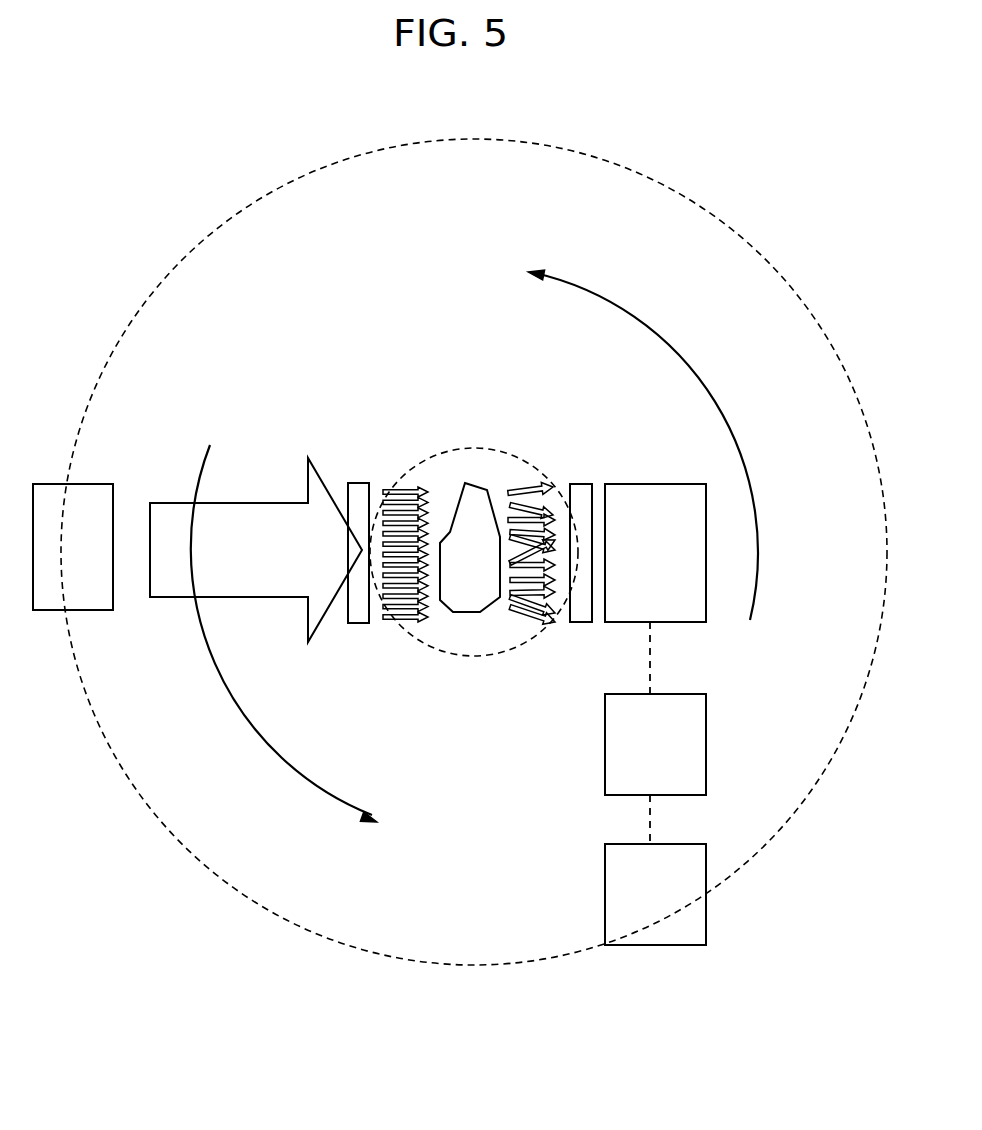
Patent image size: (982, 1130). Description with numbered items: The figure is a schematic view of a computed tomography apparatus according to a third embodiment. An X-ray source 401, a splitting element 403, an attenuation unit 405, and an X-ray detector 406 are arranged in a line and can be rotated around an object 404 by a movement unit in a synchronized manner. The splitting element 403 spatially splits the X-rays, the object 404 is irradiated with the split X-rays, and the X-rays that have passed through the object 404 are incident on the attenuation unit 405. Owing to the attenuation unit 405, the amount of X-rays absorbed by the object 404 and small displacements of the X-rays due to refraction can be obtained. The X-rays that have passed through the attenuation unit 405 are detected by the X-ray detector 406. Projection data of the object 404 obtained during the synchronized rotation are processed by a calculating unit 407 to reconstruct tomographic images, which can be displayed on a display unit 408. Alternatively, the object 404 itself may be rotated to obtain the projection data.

The X-ray source 401 is at (47, 484).
The splitting element 403 is at (358, 483).
The object 404 is at (470, 487).
The attenuation unit 405 is at (583, 484).
The X-ray detector 406 is at (660, 484).
The calculating unit 407 is at (706, 745).
The display unit 408 is at (696, 844).